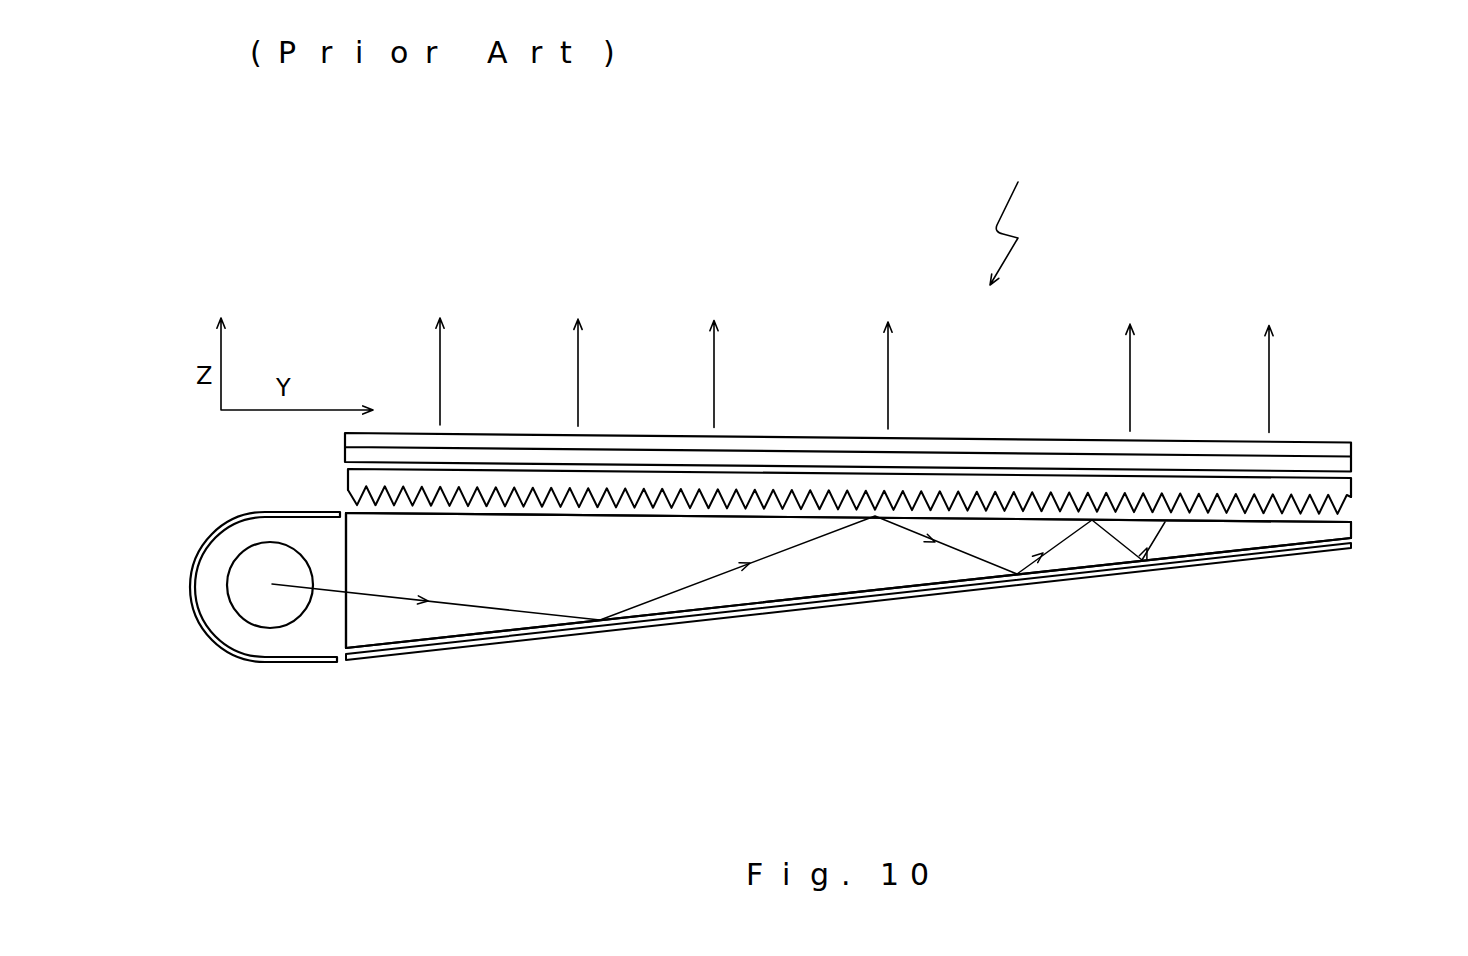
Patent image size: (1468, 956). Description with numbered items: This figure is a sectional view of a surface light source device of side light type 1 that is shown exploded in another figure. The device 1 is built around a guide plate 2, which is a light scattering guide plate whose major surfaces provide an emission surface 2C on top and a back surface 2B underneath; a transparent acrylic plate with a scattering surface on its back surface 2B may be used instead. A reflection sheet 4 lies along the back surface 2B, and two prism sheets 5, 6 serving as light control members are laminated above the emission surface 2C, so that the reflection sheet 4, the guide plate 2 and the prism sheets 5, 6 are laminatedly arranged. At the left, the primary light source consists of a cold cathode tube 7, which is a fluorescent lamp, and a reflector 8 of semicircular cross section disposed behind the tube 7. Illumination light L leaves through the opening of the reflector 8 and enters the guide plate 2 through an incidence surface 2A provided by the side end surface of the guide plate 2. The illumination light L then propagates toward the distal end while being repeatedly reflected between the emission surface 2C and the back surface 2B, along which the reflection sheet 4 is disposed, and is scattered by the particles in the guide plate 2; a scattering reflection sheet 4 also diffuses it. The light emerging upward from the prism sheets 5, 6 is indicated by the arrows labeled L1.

The surface light source device of side light type 1 is at (1035, 171).
The guide plate 2 is at (812, 580).
The incidence surface 2A is at (347, 580).
The back surface 2B is at (657, 617).
The emission surface 2C is at (770, 517).
The reflection sheet 4 is at (985, 588).
The prism sheet 5 is at (1345, 488).
The prism sheet 6 is at (1351, 450).
The cold cathode tube 7 is at (284, 614).
The reflector 8 is at (207, 632).
The illumination light L is at (498, 608).
The emitted light L1 is at (1269, 403).